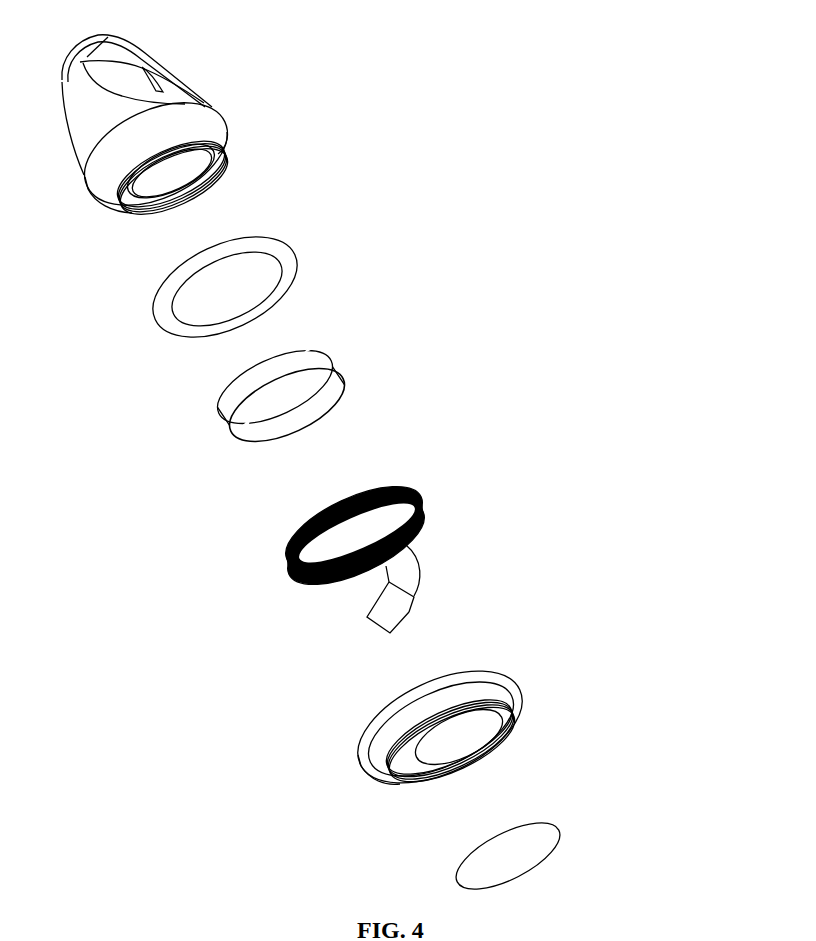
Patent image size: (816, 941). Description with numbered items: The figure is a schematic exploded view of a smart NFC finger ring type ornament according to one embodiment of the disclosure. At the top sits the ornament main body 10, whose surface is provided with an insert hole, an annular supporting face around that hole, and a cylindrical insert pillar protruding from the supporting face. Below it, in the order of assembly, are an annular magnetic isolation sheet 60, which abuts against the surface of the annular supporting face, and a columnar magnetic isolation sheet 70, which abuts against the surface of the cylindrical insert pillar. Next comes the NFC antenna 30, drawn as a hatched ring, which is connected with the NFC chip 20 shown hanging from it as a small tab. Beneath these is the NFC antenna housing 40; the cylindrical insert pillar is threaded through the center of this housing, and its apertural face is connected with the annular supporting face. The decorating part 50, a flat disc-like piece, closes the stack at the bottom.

The ornament main body 10 is at (223, 108).
The annular magnetic isolation sheet 60 is at (297, 258).
The columnar magnetic isolation sheet 70 is at (343, 380).
The NFC antenna 30 is at (420, 505).
The NFC chip 20 is at (409, 614).
The NFC antenna housing 40 is at (503, 731).
The decorating part 50 is at (557, 851).